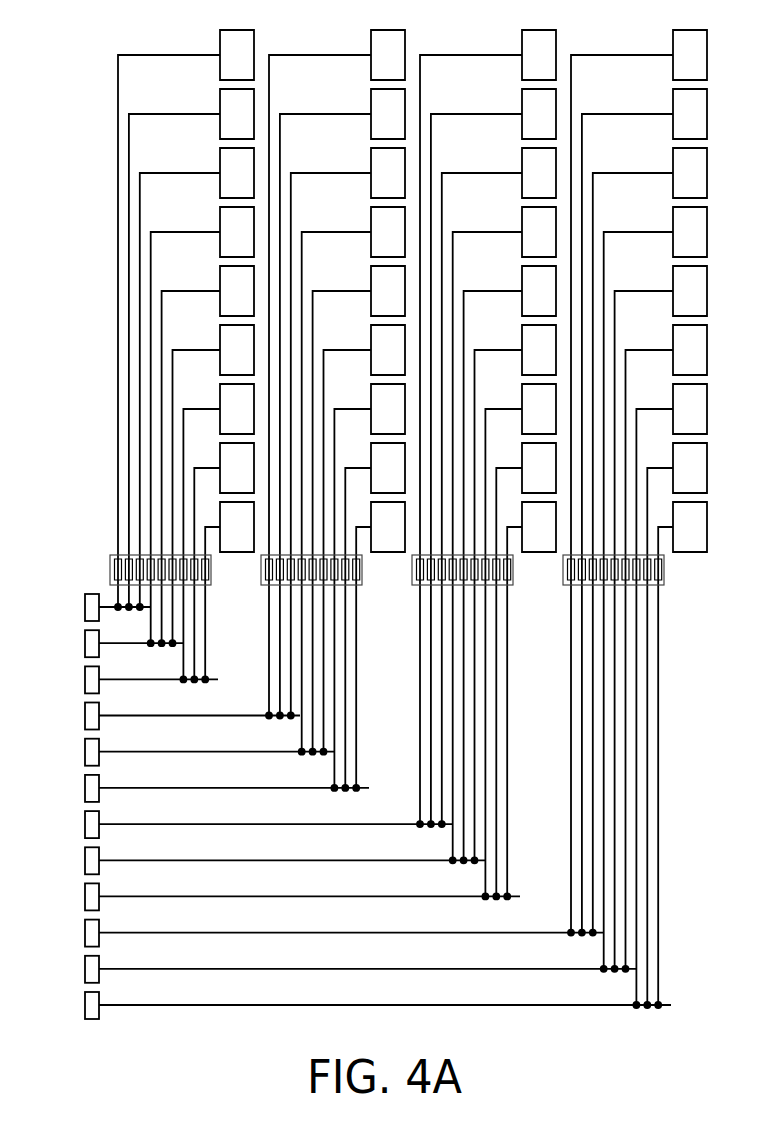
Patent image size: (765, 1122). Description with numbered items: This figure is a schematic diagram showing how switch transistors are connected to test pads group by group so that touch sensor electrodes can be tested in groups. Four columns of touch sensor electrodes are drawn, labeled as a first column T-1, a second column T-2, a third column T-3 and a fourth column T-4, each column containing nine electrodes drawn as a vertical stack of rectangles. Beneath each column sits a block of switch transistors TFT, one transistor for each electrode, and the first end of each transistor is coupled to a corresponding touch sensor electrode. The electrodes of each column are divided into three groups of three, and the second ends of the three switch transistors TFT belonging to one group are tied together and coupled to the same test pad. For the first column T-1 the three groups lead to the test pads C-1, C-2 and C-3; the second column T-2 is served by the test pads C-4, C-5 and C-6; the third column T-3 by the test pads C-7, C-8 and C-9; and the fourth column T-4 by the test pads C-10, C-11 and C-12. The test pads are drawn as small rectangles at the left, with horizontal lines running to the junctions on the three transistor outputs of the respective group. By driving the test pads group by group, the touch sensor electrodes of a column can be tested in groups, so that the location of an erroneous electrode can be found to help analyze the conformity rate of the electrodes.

The first column of touch sensor electrodes T-1 is at (186, 341).
The second column of touch sensor electrodes T-2 is at (337, 395).
The third column of touch sensor electrodes T-3 is at (488, 449).
The fourth column of touch sensor electrodes T-4 is at (639, 504).
The switch transistors TFT is at (686, 595).
The test pad C-1 is at (95, 607).
The test pad C-2 is at (112, 643).
The test pad C-3 is at (129, 679).
The test pad C-4 is at (170, 716).
The test pad C-5 is at (187, 752).
The test pad C-6 is at (205, 788).
The test pad C-7 is at (246, 824).
The test pad C-8 is at (263, 860).
The test pad C-9 is at (280, 896).
The test pad C-10 is at (315, 933).
The test pad C-11 is at (332, 969).
The test pad C-12 is at (349, 1005).